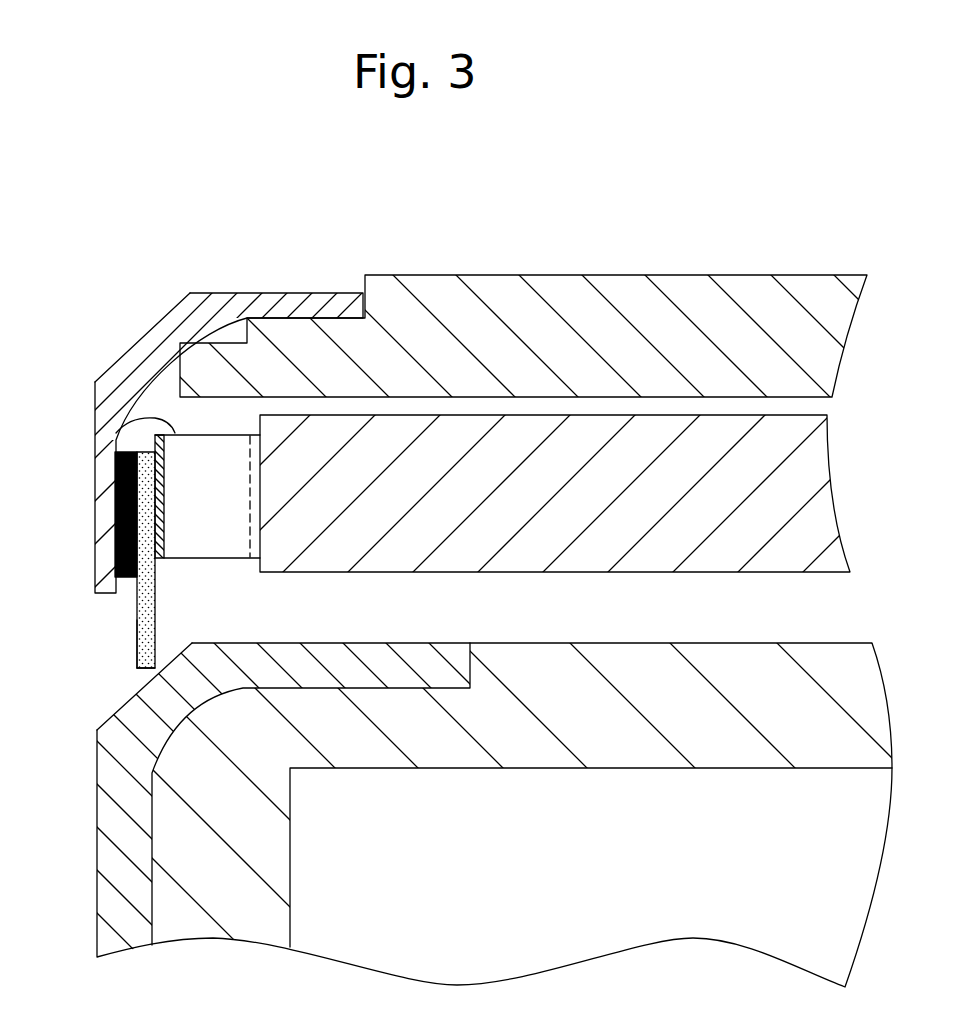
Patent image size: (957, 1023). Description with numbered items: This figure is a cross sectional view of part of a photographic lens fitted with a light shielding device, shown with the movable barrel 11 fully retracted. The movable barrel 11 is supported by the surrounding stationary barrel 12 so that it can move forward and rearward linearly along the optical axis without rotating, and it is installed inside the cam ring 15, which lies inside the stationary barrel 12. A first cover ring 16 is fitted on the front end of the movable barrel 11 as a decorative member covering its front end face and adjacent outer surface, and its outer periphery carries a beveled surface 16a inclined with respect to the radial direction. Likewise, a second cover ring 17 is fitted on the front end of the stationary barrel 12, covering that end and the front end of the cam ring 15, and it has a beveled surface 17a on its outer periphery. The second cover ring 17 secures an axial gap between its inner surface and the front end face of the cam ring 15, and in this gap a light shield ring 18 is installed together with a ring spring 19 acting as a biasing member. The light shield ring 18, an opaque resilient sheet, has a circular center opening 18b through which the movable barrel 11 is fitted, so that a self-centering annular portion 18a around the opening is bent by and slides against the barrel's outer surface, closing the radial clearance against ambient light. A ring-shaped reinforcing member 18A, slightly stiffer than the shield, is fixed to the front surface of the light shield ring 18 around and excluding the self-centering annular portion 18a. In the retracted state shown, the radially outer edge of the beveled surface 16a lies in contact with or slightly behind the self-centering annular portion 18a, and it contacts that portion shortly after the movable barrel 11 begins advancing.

The movable barrel 11 is at (552, 758).
The stationary barrel 12 is at (693, 297).
The cam ring 15 is at (773, 557).
The first cover ring 16 is at (108, 860).
The beveled surface 16a is at (127, 703).
The second cover ring 17 is at (282, 297).
The beveled surface 17a is at (150, 330).
The light shield ring 18 is at (150, 605).
The reinforcing member 18A is at (115, 507).
The self-centering annular portion 18a is at (137, 656).
The circular center opening 18b is at (137, 672).
The ring spring 19 is at (110, 433).